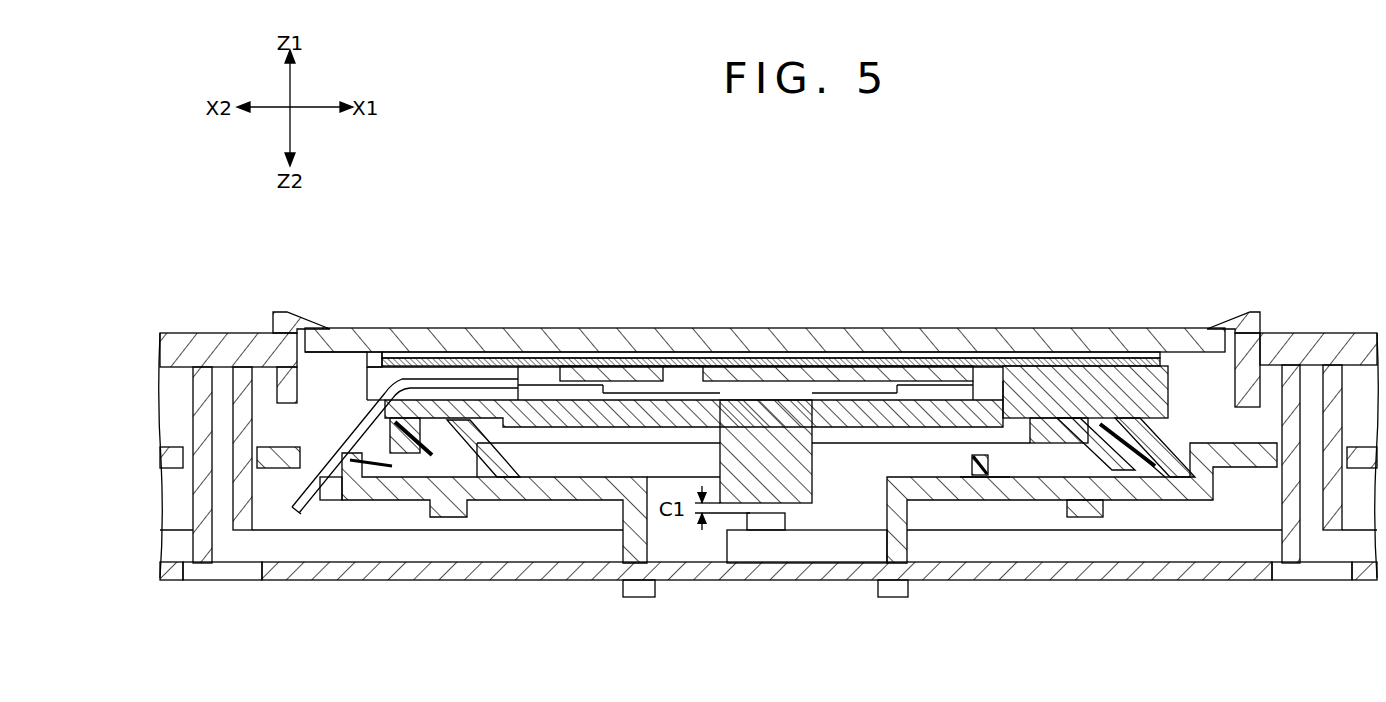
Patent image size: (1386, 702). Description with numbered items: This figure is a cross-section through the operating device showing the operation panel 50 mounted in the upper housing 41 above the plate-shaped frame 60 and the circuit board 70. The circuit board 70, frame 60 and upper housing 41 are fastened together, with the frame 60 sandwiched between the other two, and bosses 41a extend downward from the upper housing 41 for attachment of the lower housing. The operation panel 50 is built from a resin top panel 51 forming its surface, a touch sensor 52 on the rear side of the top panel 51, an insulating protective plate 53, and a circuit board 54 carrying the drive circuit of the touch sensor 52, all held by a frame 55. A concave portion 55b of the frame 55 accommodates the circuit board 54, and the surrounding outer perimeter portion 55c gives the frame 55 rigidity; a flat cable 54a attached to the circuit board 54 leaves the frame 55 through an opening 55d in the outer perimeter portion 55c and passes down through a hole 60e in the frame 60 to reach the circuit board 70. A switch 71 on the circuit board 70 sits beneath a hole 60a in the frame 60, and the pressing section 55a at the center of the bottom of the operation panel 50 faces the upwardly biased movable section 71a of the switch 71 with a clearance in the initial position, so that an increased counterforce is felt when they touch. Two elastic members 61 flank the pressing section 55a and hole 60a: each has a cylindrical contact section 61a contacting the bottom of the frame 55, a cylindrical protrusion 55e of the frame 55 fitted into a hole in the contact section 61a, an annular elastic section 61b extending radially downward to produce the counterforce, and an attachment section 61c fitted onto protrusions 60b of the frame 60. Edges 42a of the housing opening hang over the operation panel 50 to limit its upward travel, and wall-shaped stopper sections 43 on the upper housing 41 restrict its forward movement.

The upper housing 41 is at (1312, 350).
The boss 41a is at (220, 548).
The edge of the opening 42a is at (308, 324).
The stopper section 43 is at (294, 399).
The operation panel 50 is at (765, 302).
The top panel 51 is at (413, 343).
The touch sensor 52 is at (470, 355).
The protective plate 53 is at (507, 362).
The circuit board 54 is at (606, 372).
The flat cable 54a is at (392, 392).
The frame 55 is at (862, 413).
The pressing section 55a is at (812, 460).
The concave portion 55b is at (918, 380).
The outer perimeter portion 55c is at (1090, 388).
The opening 55d is at (383, 372).
The protrusion 55e is at (435, 445).
The frame 60 is at (542, 490).
The hole 60a is at (688, 475).
The protrusion 60b is at (995, 467).
The hole 60e is at (333, 490).
The elastic member 61 is at (384, 472).
The contact section 61a is at (1142, 425).
The elastic section 61b is at (1156, 460).
The attachment section 61c is at (975, 463).
The circuit board 70 is at (297, 571).
The switch 71 is at (770, 545).
The movable section 71a is at (786, 521).